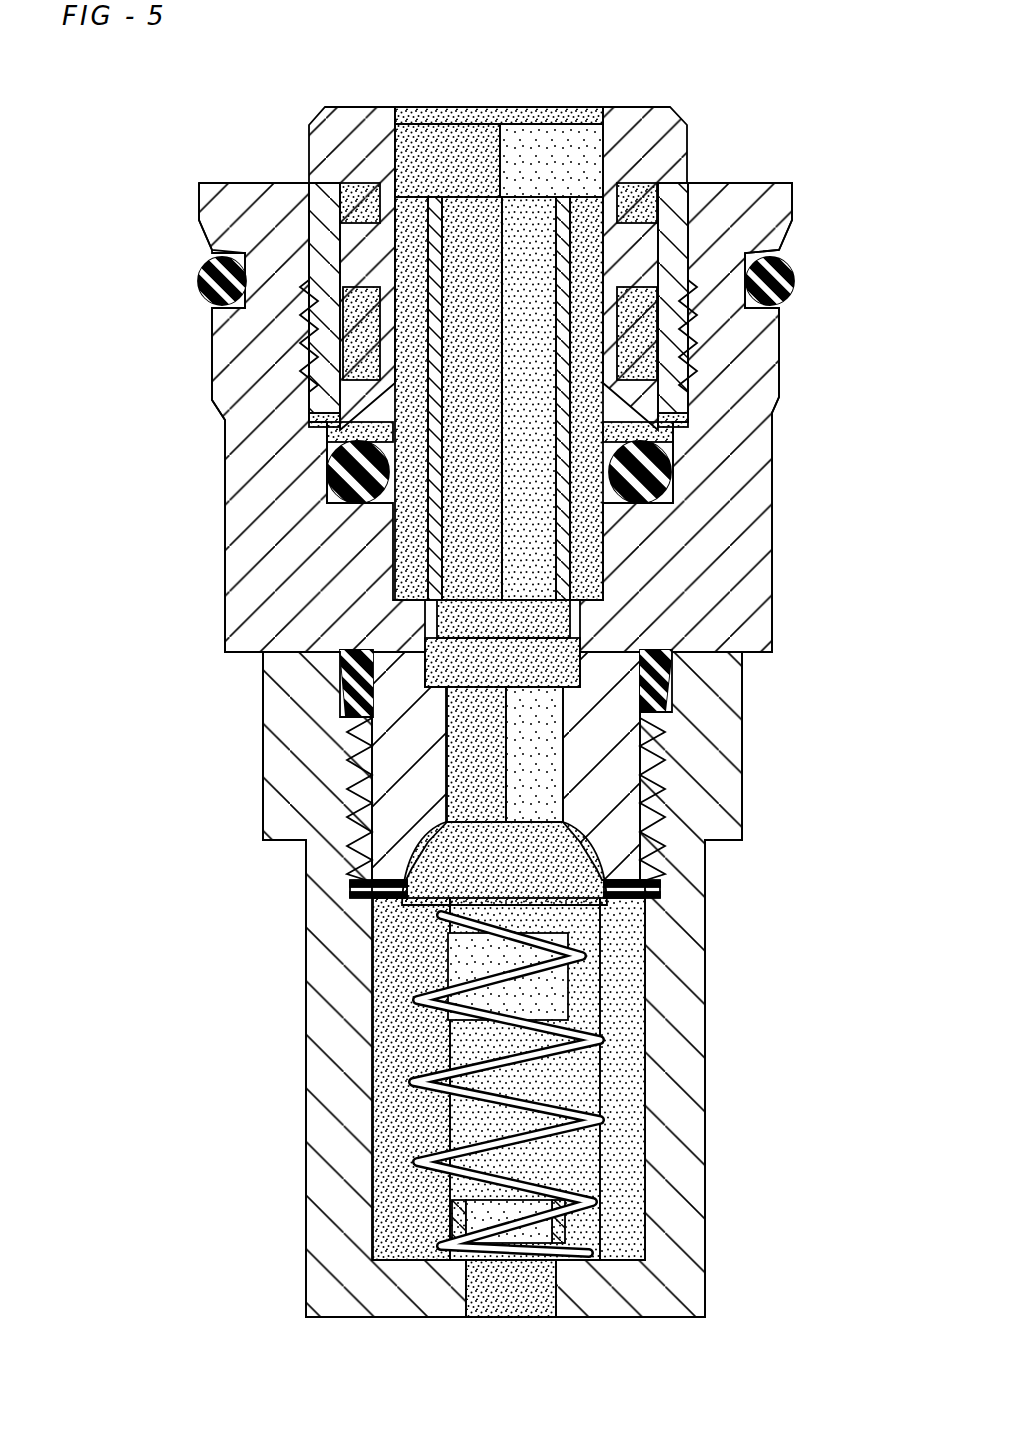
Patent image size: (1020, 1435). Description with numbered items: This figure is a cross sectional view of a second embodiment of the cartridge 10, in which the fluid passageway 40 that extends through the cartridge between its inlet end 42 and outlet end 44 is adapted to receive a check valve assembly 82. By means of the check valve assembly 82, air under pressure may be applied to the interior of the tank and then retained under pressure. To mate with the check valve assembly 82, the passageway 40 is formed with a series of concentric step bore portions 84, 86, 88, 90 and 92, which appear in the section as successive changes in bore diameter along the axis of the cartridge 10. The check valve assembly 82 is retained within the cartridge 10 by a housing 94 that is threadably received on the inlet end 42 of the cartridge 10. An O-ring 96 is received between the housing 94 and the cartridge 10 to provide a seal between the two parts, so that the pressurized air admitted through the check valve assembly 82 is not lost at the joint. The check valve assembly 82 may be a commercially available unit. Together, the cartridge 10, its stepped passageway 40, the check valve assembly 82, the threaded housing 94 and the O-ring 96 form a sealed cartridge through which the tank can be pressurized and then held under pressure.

The cartridge 10 is at (222, 590).
The fluid passageway 40 is at (305, 398).
The inlet end 42 is at (253, 653).
The outlet end 44 is at (735, 183).
The check valve assembly 82 is at (605, 97).
The step bore portion 84 is at (698, 378).
The step bore portion 86 is at (676, 474).
The step bore portion 88 is at (610, 556).
The step bore portion 90 is at (605, 640).
The step bore portion 92 is at (595, 672).
The housing 94 is at (706, 1078).
The O-ring 96 is at (328, 480).